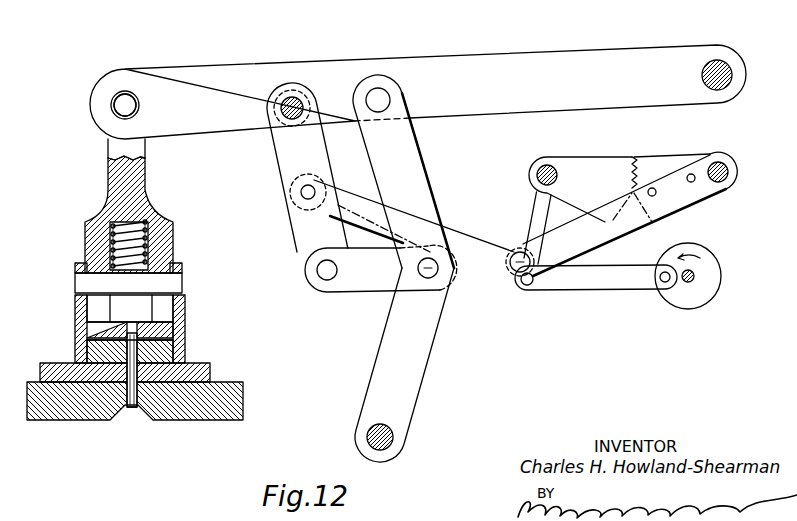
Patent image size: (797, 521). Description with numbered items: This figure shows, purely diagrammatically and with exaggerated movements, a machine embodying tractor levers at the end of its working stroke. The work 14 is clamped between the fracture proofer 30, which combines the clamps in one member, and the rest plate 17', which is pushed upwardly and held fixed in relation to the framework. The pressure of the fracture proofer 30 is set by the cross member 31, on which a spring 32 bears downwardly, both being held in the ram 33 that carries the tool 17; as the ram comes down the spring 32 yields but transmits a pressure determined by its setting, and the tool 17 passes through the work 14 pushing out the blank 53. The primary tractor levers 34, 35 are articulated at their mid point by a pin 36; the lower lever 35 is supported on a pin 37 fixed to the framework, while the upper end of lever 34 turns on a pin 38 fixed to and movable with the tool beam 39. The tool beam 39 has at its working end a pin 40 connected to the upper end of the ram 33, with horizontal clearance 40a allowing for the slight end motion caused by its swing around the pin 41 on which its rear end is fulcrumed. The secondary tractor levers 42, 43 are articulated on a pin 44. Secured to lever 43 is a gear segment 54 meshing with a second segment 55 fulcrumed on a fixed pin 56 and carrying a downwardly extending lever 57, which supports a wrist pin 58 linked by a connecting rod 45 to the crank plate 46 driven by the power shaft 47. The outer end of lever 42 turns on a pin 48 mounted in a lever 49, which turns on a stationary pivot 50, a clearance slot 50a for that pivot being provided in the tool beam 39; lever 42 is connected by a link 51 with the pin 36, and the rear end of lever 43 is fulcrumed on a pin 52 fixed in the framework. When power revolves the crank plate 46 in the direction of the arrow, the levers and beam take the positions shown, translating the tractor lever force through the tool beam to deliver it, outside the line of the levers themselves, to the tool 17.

The work 14 is at (210, 372).
The tool 17 is at (168, 370).
The rest plate 17' is at (154, 401).
The fracture proofer 30 is at (78, 345).
The cross member 31 is at (82, 290).
The spring 32 is at (100, 233).
The ram 33 is at (108, 181).
The primary tractor lever 34 is at (413, 163).
The primary tractor lever 35 is at (394, 347).
The pin 36 is at (438, 270).
The pin 37 is at (393, 438).
The pin 38 is at (377, 88).
The tool beam 39 is at (496, 62).
The pin 40 is at (121, 97).
The horizontal clearance 40a is at (147, 104).
The pin 41 is at (715, 62).
The secondary tractor lever 42 is at (447, 228).
The secondary tractor lever 43 is at (606, 238).
The pin 44 is at (519, 252).
The connecting rod 45 is at (605, 279).
The crank plate 46 is at (707, 256).
The power shaft 47 is at (697, 278).
The pin 48 is at (301, 193).
The lever 49 is at (305, 252).
The stationary pivot 50 is at (286, 116).
The clearance slot 50a is at (302, 123).
The link 51 is at (370, 297).
The pin 52 is at (724, 166).
The blank 53 is at (132, 408).
The gear segment 54 is at (660, 162).
The second segment 55 is at (594, 163).
The fixed pin 56 is at (548, 166).
The lever 57 is at (533, 205).
The wrist pin 58 is at (520, 283).